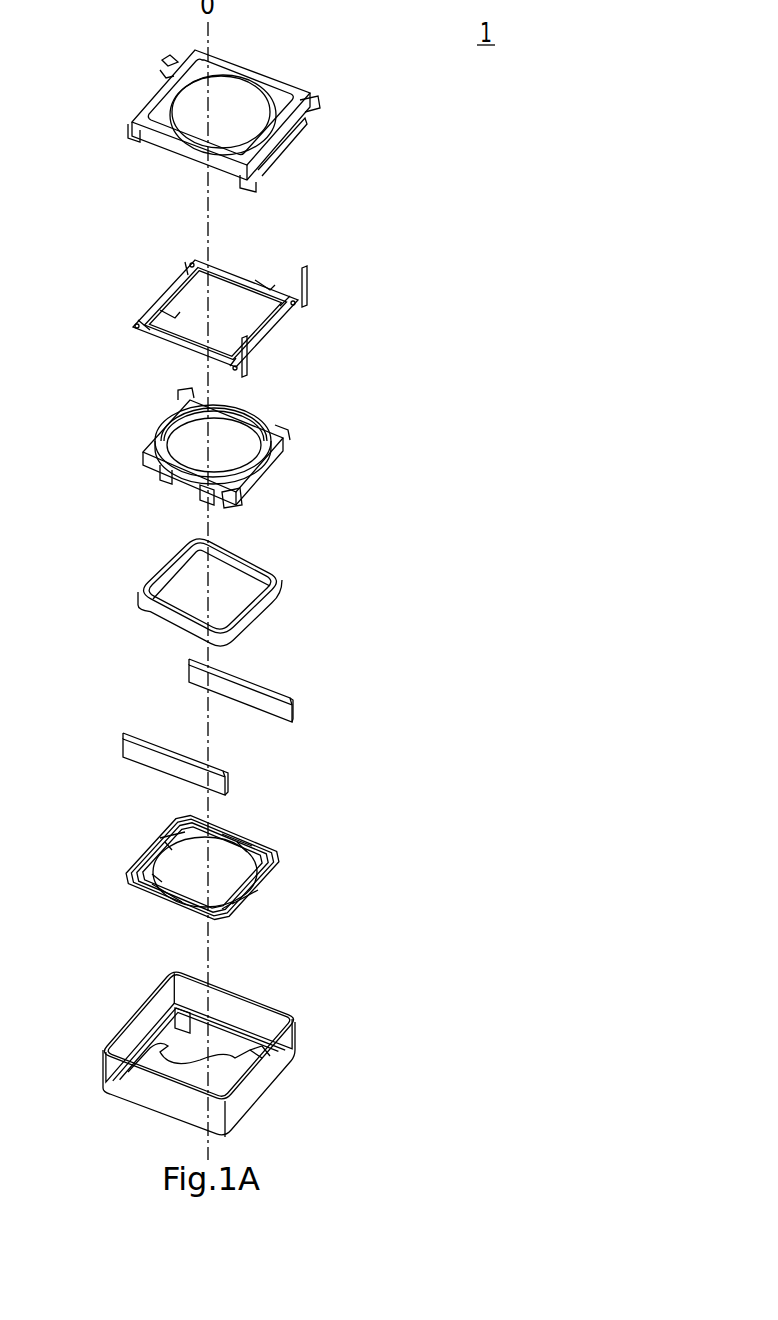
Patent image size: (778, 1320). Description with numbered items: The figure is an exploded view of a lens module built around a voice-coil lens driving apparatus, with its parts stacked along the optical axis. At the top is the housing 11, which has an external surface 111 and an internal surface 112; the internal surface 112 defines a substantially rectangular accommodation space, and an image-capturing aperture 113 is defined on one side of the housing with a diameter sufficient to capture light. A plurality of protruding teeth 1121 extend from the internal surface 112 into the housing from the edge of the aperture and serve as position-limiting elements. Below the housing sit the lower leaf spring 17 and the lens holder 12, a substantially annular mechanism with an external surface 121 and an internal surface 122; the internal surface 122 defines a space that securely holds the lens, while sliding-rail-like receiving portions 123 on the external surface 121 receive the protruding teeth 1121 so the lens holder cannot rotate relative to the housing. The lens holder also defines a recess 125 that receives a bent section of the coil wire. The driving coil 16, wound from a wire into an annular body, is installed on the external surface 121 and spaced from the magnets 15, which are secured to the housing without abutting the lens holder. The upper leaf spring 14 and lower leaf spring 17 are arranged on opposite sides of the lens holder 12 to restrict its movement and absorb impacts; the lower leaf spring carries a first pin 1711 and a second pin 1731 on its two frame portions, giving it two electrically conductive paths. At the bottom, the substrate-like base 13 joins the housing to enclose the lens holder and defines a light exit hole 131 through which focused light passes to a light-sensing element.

The housing 11 is at (216, 1048).
The external surface 111 is at (287, 1050).
The internal surface 112 is at (257, 1018).
The protruding teeth 1121 is at (175, 1002).
The image-capturing aperture 113 is at (152, 1052).
The lens holder 12 is at (237, 464).
The external surface 121 is at (262, 477).
The internal surface 122 is at (172, 415).
The receiving portions 123 is at (232, 503).
The recess 125 is at (213, 495).
The base 13 is at (338, 100).
The light exit hole 131 is at (166, 98).
The upper leaf spring 14 is at (287, 860).
The magnets 15 is at (283, 707).
The driving coil 16 is at (260, 617).
The lower leaf spring 17 is at (272, 305).
The first pin 1711 is at (309, 280).
The second pin 1731 is at (264, 353).